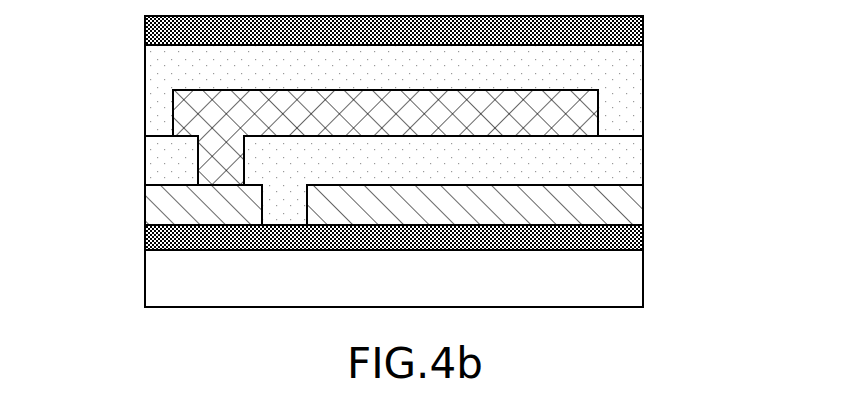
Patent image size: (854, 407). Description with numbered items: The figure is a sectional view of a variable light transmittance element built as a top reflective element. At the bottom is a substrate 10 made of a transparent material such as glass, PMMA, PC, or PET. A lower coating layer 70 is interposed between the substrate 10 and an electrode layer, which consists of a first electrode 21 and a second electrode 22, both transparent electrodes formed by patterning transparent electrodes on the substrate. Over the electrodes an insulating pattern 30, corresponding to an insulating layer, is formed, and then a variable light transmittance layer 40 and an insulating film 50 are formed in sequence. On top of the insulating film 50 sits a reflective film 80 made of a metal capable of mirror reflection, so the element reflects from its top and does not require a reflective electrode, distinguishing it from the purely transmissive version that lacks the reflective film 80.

The substrate 10 is at (610, 282).
The lower coating layer 70 is at (610, 240).
The first electrode 21 is at (182, 205).
The second electrode 22 is at (610, 200).
The insulating pattern 30 is at (610, 158).
The variable light transmittance layer 40 is at (572, 116).
The insulating film 50 is at (610, 70).
The reflective film 80 is at (612, 33).